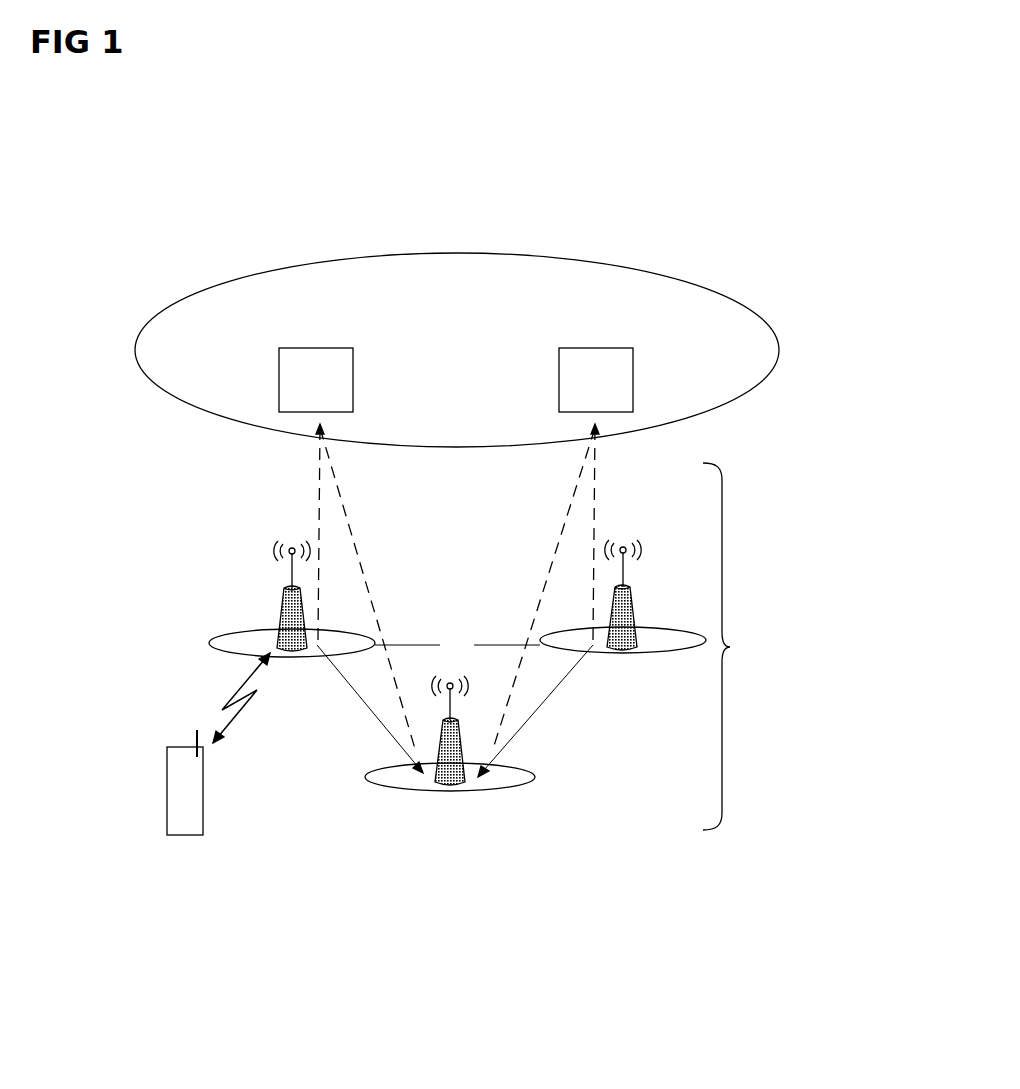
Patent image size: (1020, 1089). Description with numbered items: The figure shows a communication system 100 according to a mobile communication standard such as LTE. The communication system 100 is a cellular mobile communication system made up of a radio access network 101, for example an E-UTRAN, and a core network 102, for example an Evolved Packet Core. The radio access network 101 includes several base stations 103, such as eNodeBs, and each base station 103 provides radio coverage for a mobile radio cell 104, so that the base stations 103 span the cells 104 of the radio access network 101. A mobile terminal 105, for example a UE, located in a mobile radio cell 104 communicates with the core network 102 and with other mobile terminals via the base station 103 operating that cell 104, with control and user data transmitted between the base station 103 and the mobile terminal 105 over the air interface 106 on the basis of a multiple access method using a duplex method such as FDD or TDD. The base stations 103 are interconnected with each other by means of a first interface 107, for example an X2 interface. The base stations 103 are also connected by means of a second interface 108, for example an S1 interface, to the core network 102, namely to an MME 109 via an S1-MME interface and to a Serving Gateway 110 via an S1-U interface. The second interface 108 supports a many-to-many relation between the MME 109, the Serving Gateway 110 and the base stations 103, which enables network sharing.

The communication system 100 is at (755, 187).
The radio access network 101 is at (817, 623).
The core network 102 is at (770, 323).
The base station 103 is at (282, 592).
The mobile radio cell 104 is at (222, 645).
The mobile terminal 105 is at (187, 835).
The air interface 106 is at (250, 705).
The first interface 107 is at (357, 722).
The second interface 108 is at (318, 477).
The MME 109 is at (313, 348).
The Serving Gateway 110 is at (596, 348).